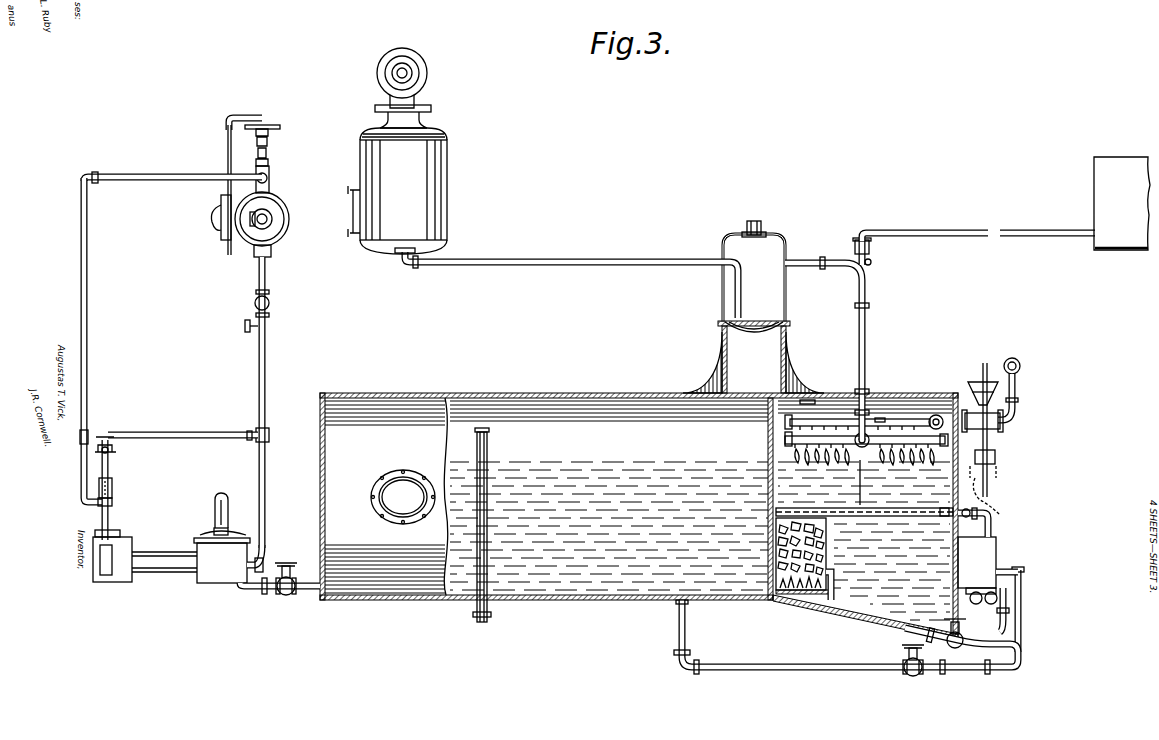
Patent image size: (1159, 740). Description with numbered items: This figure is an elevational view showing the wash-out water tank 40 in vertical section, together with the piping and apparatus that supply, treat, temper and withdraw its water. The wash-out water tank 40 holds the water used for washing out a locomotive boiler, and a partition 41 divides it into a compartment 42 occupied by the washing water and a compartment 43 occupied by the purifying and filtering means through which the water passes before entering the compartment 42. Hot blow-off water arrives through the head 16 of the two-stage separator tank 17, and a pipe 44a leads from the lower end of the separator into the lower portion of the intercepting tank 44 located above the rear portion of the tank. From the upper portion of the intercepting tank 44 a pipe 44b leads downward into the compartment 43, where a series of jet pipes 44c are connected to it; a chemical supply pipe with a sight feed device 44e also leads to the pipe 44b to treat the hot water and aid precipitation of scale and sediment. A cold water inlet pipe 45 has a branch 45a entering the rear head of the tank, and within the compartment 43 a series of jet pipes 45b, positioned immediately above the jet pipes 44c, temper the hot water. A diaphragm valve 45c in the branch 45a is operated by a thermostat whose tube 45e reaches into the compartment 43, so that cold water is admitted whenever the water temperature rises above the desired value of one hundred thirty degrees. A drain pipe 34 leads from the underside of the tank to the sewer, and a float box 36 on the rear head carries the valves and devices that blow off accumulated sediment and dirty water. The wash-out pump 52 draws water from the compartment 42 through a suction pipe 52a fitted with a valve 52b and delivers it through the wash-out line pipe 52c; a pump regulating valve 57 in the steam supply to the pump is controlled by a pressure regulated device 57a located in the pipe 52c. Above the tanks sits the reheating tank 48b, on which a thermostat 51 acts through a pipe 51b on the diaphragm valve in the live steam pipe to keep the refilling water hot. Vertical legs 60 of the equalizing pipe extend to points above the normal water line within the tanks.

The head 16 is at (427, 68).
The two-stage separator tank 17 is at (436, 164).
The pipe 34 is at (752, 657).
The box 36 is at (961, 594).
The wash-out water tank 40 is at (494, 393).
The partition 41 is at (775, 444).
The compartment 42 is at (609, 516).
The compartment 43 is at (918, 397).
The intercepting tank 44 is at (765, 262).
The pipe 44a is at (603, 262).
The pipe 44b is at (868, 317).
The jet pipes 44c is at (822, 400).
The sight feed device 44e is at (872, 252).
The cold water inlet pipe 45 is at (1014, 360).
The branch 45a is at (1000, 432).
The jet pipes 45b is at (878, 420).
The diaphragm valve 45c is at (976, 380).
The tube 45e is at (992, 520).
The reheating tank 48b is at (283, 232).
The thermostat 51 is at (222, 245).
The pipe 51b is at (226, 165).
The wash-out pump 52 is at (213, 585).
The suction pipe 52a is at (270, 594).
The valve 52b is at (282, 568).
The wash-out line pipe 52c is at (268, 338).
The pump regulating valve 57 is at (112, 500).
The pressure regulated device 57a is at (262, 435).
The vertical legs 60 is at (488, 466).